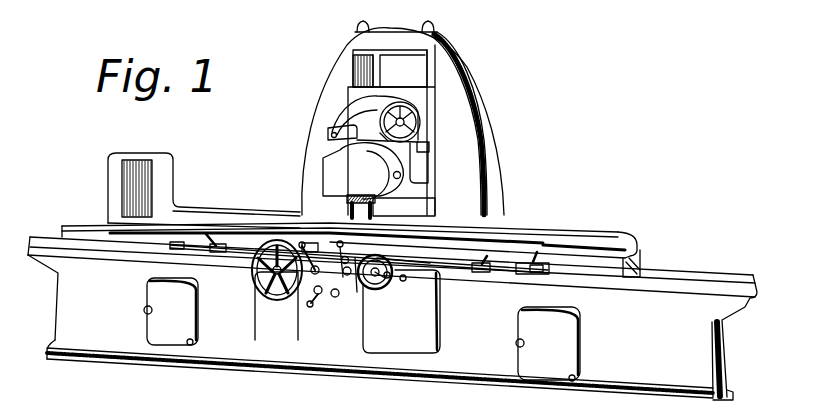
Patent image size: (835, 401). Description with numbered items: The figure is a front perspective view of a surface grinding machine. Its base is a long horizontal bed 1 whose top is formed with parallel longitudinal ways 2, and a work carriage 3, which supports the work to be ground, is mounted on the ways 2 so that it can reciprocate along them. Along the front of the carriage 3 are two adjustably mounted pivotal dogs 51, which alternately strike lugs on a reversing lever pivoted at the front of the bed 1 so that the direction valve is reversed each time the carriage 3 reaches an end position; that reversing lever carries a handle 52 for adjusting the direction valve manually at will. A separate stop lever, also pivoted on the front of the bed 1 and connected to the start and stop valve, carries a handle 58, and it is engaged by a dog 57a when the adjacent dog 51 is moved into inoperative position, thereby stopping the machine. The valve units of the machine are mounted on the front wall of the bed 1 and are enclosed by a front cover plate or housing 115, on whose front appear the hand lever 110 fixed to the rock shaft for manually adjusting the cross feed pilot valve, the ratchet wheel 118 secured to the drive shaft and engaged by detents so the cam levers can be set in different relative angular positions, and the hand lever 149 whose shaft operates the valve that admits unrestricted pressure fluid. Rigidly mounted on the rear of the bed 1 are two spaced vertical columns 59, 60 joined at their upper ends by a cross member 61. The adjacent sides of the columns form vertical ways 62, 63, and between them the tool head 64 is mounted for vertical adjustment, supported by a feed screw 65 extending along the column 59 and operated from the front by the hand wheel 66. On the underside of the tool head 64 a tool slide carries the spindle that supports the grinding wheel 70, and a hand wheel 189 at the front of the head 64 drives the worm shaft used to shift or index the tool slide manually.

The bed 1 is at (697, 346).
The longitudinal ways 2 is at (697, 282).
The work carriage 3 is at (538, 243).
The pivotal dogs 51 is at (222, 250).
The handle 52 is at (303, 247).
The dog 57a is at (515, 265).
The handle 58 is at (340, 243).
The vertical column 59 is at (306, 133).
The vertical column 60 is at (494, 148).
The cross member 61 is at (433, 40).
The vertical way 62 is at (352, 73).
The vertical way 63 is at (427, 70).
The tool head 64 is at (428, 148).
The feed screw 65 is at (352, 63).
The hand wheel 66 is at (253, 287).
The grinding wheel 70 is at (372, 204).
The hand lever 110 is at (357, 251).
The front cover plate or housing 115 is at (428, 318).
The ratchet wheel 118 is at (386, 283).
The hand lever 149 is at (322, 297).
The hand wheel 189 is at (416, 110).